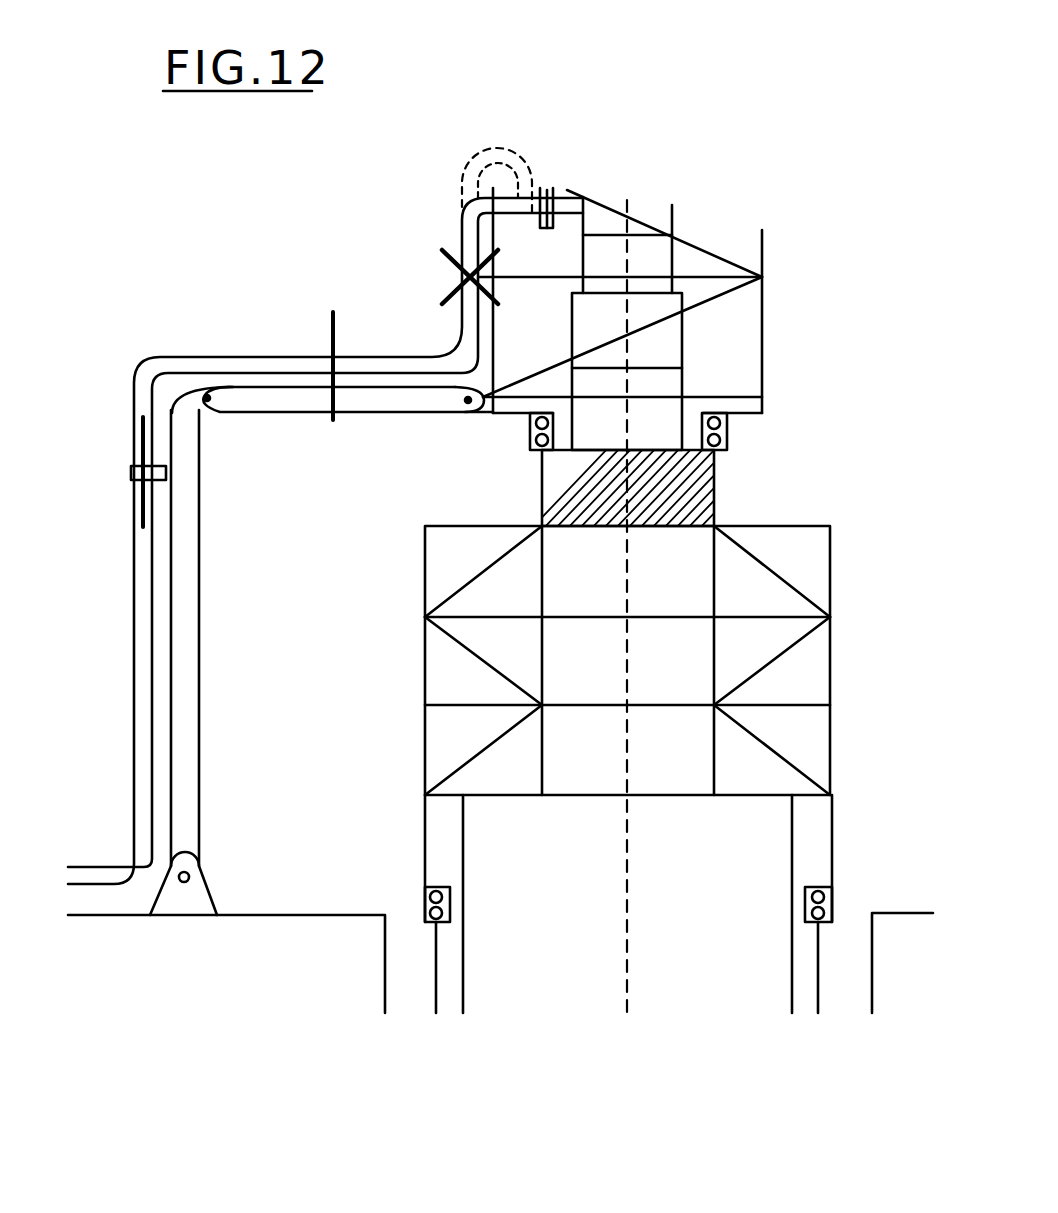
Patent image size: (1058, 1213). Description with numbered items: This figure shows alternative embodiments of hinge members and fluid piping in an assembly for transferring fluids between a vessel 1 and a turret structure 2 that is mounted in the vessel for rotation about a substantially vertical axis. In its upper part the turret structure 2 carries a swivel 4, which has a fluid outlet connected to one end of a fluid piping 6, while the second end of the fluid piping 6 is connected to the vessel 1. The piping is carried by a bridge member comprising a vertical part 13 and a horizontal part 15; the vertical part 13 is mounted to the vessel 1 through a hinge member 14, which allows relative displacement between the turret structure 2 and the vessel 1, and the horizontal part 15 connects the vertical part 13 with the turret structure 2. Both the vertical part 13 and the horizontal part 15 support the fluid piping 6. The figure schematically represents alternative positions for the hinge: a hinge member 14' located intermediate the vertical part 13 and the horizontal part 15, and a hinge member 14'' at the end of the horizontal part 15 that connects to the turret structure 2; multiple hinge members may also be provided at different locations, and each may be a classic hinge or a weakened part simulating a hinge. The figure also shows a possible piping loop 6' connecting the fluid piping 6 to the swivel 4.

The vessel 1 is at (330, 935).
The turret structure 2 is at (424, 606).
The swivel 4 is at (686, 345).
The fluid piping 6 is at (325, 541).
The piping loop 6' is at (497, 152).
The vertical part 13 is at (196, 670).
The hinge member 14 is at (205, 883).
The hinge member 14' is at (189, 344).
The hinge member 14'' is at (467, 435).
The horizontal part 15 is at (386, 407).